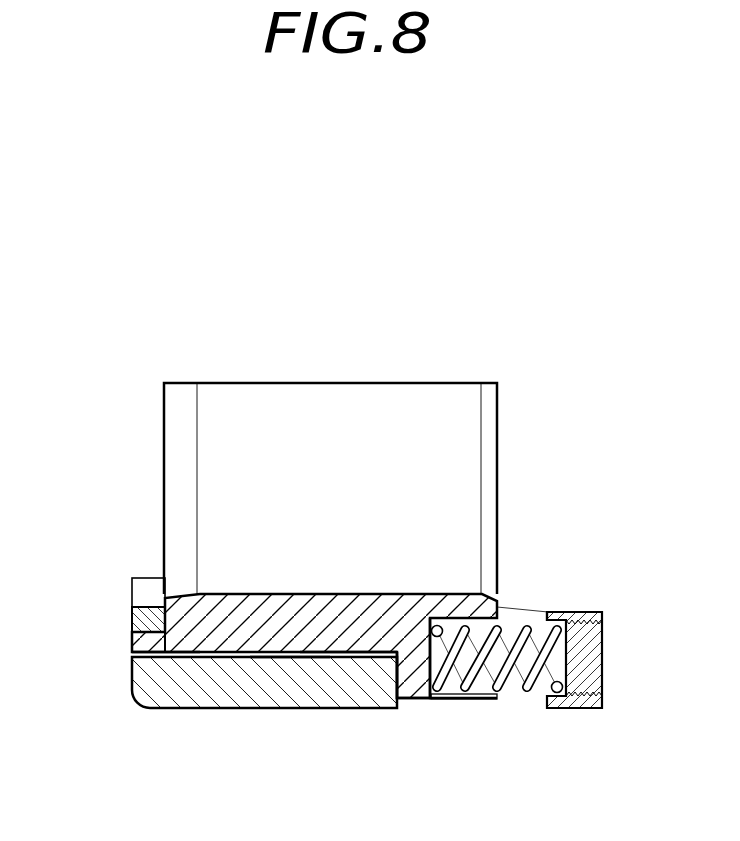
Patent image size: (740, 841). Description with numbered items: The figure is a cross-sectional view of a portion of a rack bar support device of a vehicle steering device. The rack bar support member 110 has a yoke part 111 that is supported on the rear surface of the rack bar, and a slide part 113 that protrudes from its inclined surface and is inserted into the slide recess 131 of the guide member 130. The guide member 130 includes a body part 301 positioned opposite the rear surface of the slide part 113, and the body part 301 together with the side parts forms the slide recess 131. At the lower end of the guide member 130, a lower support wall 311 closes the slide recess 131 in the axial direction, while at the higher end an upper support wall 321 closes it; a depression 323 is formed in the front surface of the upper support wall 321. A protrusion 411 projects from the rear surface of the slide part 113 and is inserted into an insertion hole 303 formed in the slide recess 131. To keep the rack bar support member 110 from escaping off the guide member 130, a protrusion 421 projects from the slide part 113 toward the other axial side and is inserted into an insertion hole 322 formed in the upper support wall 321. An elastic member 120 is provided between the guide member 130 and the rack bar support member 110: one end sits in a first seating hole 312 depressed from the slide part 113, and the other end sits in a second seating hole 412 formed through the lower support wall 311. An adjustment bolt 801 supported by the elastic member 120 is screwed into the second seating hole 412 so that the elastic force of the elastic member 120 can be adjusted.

The yoke part 111 is at (325, 403).
The rack bar support member 110 is at (282, 659).
The slide part 113 is at (345, 648).
The elastic member 120 is at (522, 688).
The guide member 130 is at (264, 707).
The body part 301 is at (264, 682).
The slide recess 131 is at (290, 652).
The insertion hole 303 is at (477, 700).
The lower support wall 311 is at (582, 612).
The first seating hole 312 is at (548, 624).
The upper support wall 321 is at (142, 619).
The insertion hole 322 is at (132, 654).
The depression 323 is at (142, 592).
The protrusion 411 is at (416, 684).
The second seating hole 412 is at (440, 694).
The protrusion 421 is at (140, 644).
The adjustment bolt 801 is at (578, 628).